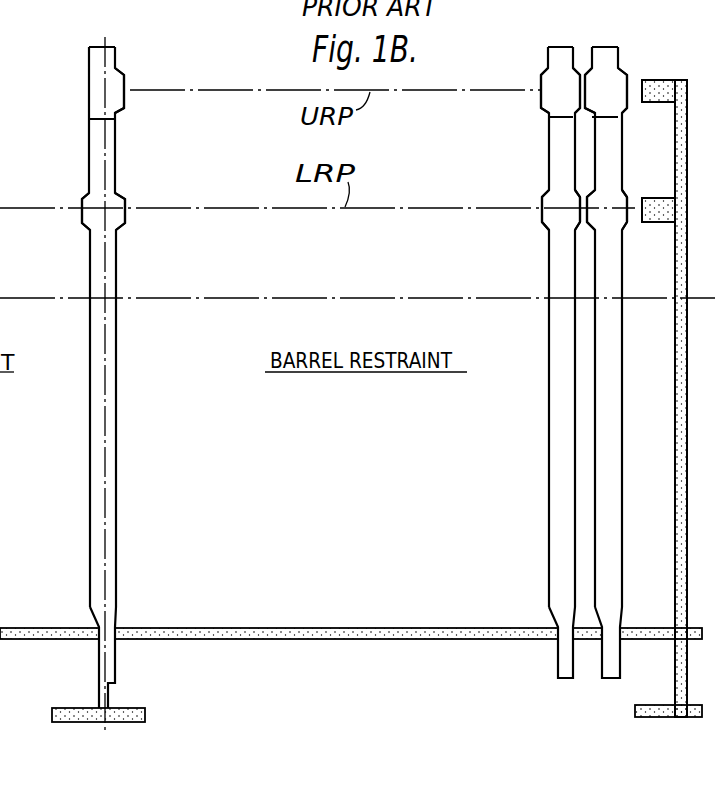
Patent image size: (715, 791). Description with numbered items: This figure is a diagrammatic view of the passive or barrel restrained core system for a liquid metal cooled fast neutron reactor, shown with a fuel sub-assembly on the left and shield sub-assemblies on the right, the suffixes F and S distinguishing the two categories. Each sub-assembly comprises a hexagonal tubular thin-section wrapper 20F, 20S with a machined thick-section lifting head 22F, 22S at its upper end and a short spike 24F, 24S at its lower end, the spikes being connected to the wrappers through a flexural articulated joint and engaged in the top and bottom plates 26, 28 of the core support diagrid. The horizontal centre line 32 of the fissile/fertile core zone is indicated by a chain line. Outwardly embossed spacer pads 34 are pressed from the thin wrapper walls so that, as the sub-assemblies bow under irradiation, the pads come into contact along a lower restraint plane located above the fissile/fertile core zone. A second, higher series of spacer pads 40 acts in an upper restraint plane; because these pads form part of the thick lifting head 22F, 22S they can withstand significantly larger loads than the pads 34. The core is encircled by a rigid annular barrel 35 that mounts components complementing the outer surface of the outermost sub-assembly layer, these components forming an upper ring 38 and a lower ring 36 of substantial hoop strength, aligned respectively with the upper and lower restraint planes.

The wrapper (fuel sub-assembly) 20F is at (135, 432).
The wrapper (shield sub-assembly) 20S is at (600, 407).
The lifting head (fuel sub-assembly) 22F is at (116, 60).
The lifting head (shield sub-assembly) 22S is at (552, 55).
The spike (fuel sub-assembly) 24F is at (138, 665).
The spike (shield sub-assembly) 24S is at (608, 653).
The top plate of diagrid 26 is at (365, 628).
The bottom plate of diagrid 28 is at (62, 708).
The horizontal centre line 32 is at (254, 298).
The spacer pads 34 is at (82, 200).
The barrel 35 is at (675, 377).
The lower ring 36 is at (658, 226).
The upper ring 38 is at (657, 105).
The spacer pads (upper) 40 is at (124, 98).